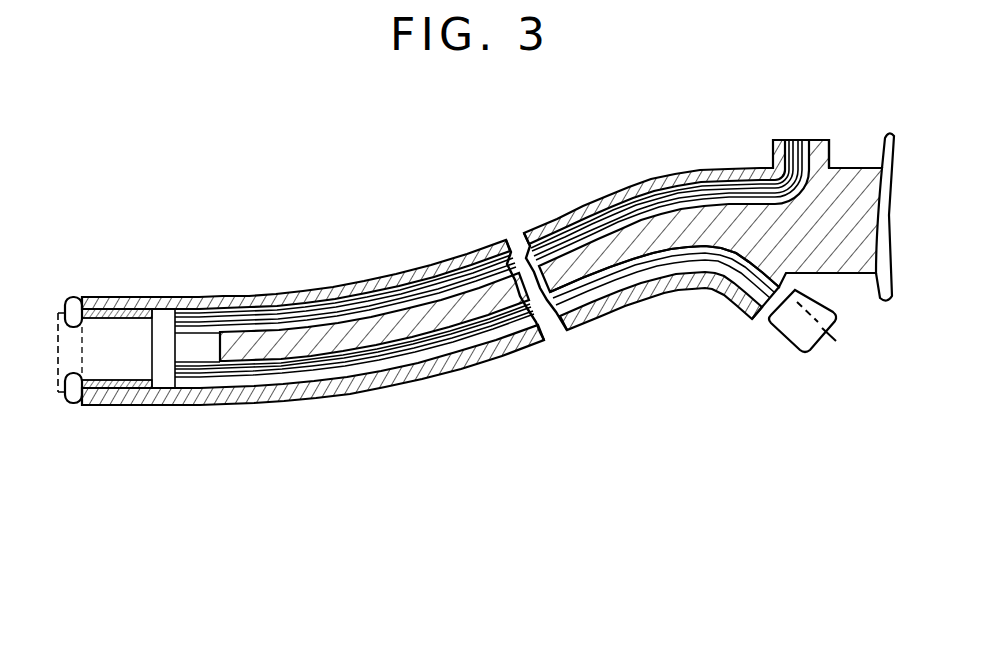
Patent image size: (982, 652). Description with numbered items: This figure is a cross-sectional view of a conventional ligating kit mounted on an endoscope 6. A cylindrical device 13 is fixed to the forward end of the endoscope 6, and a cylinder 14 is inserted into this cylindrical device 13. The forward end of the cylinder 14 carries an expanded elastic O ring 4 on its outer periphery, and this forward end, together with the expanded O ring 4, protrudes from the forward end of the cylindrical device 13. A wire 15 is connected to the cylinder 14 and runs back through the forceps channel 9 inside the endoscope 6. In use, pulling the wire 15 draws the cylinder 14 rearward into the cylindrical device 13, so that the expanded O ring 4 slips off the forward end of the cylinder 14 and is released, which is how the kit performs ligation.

The O ring 4 is at (67, 403).
The endoscope 6 is at (398, 277).
The forceps channel 9 is at (657, 278).
The cylindrical device 13 is at (123, 298).
The cylinder 14 is at (62, 312).
The wire 15 is at (480, 342).